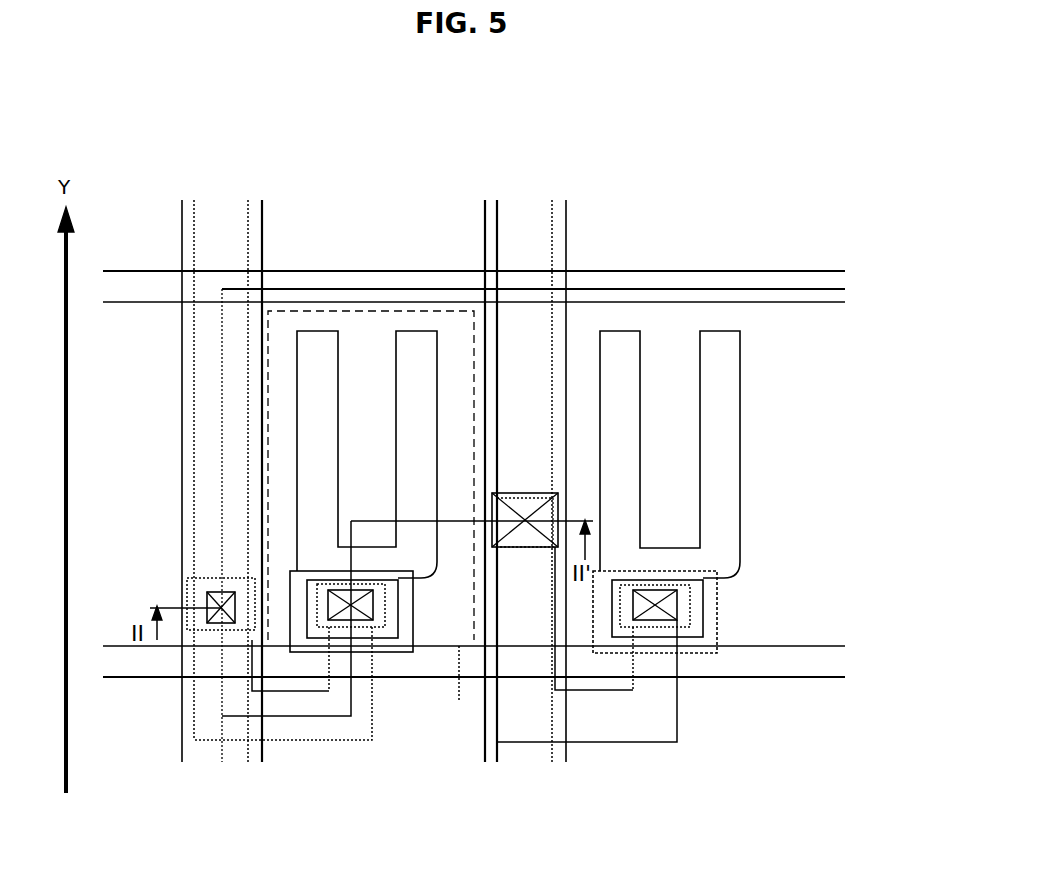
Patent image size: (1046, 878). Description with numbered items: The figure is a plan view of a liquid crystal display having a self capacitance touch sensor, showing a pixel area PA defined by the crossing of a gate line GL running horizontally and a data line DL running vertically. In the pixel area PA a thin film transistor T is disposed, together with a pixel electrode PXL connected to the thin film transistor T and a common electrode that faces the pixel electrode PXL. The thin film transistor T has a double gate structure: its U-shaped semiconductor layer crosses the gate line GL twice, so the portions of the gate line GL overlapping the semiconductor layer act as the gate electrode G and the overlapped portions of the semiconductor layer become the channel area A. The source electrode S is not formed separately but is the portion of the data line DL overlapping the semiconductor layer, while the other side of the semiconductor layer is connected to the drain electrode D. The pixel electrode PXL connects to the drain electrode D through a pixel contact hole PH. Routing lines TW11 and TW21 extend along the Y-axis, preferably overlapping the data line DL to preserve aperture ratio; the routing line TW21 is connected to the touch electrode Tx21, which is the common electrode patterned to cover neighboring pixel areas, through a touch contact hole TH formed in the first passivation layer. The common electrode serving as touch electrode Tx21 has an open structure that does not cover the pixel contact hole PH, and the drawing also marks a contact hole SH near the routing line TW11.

The routing line TW11 is at (183, 205).
The 2row 1column routing line TW21 is at (487, 205).
The data line DL is at (250, 258).
The gate line GL is at (131, 300).
The 2row 1column touch electrode Tx21 is at (402, 290).
The pixel electrode PXL is at (300, 433).
The touch contact hole TH is at (523, 493).
The pixel contact hole PH is at (673, 603).
The sensing contact hole SH is at (207, 605).
The pixel area PA is at (454, 691).
The thin film transistor T is at (438, 807).
The source electrode S is at (248, 614).
The channel area A is at (353, 741).
The gate electrode G is at (370, 668).
The drain electrode D is at (383, 622).